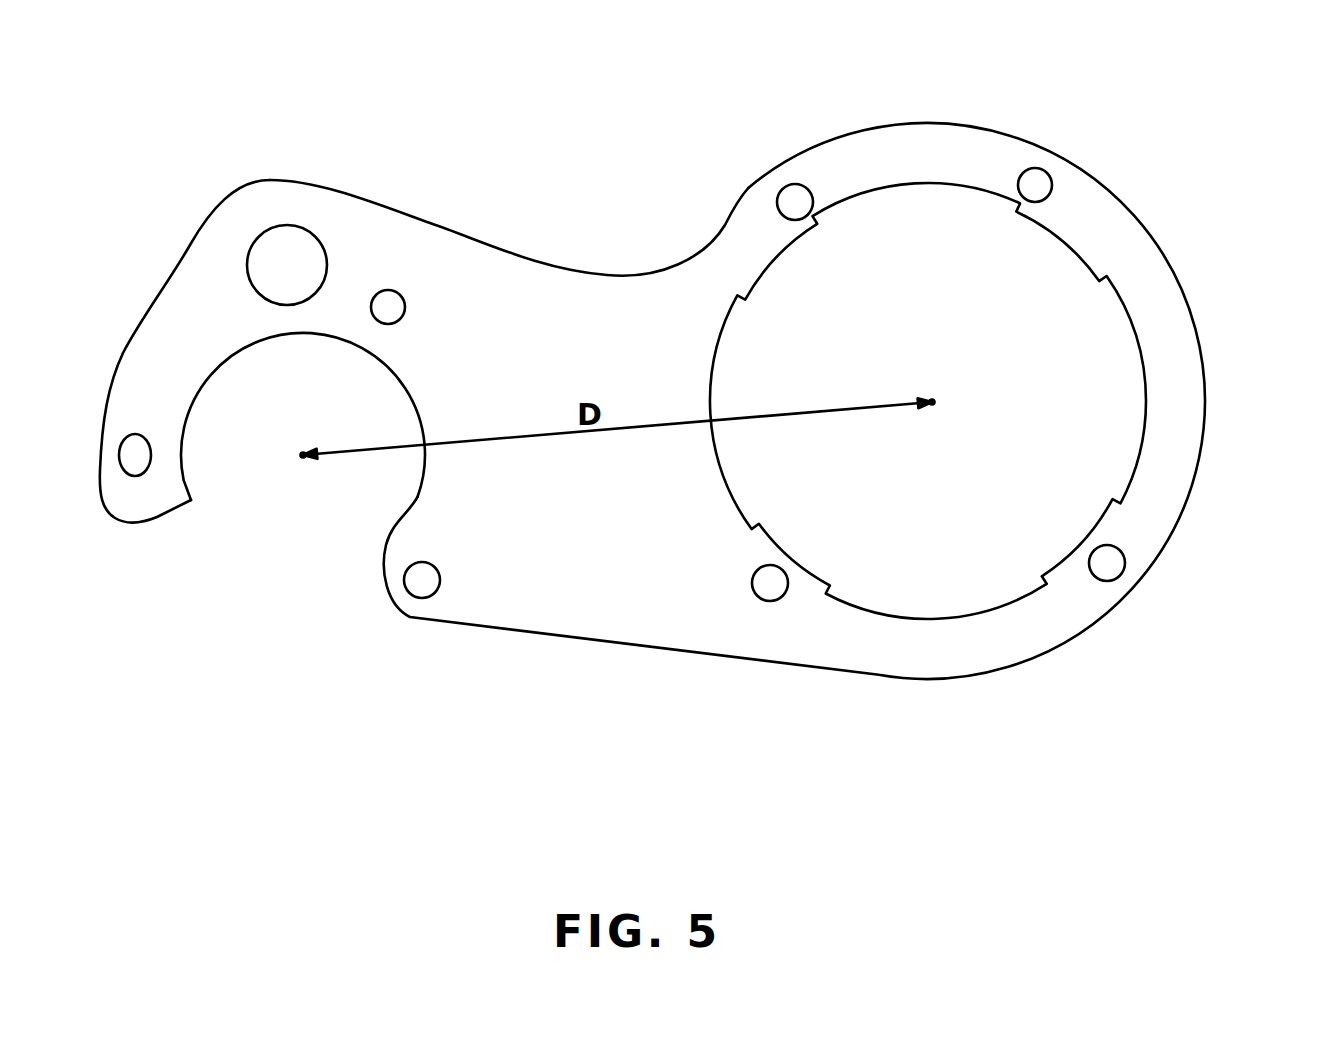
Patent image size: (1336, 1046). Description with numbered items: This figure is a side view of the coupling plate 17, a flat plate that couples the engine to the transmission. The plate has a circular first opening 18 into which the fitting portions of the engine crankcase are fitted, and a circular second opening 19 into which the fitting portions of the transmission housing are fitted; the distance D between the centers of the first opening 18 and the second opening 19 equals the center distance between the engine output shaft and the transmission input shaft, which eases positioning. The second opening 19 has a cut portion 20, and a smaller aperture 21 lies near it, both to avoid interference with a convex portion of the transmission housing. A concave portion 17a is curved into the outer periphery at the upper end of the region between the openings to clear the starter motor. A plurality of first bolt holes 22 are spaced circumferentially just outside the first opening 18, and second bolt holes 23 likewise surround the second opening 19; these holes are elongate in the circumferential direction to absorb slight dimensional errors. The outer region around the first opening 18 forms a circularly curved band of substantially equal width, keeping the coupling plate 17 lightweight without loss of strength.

The coupling plate 17 is at (641, 464).
The concave portion 17a is at (607, 272).
The first opening 18 is at (960, 357).
The second opening 19 is at (292, 434).
The cut portion 20 is at (251, 464).
The aperture 21 is at (297, 263).
The first bolt holes 22 is at (1037, 183).
The second bolt holes 23 is at (388, 310).